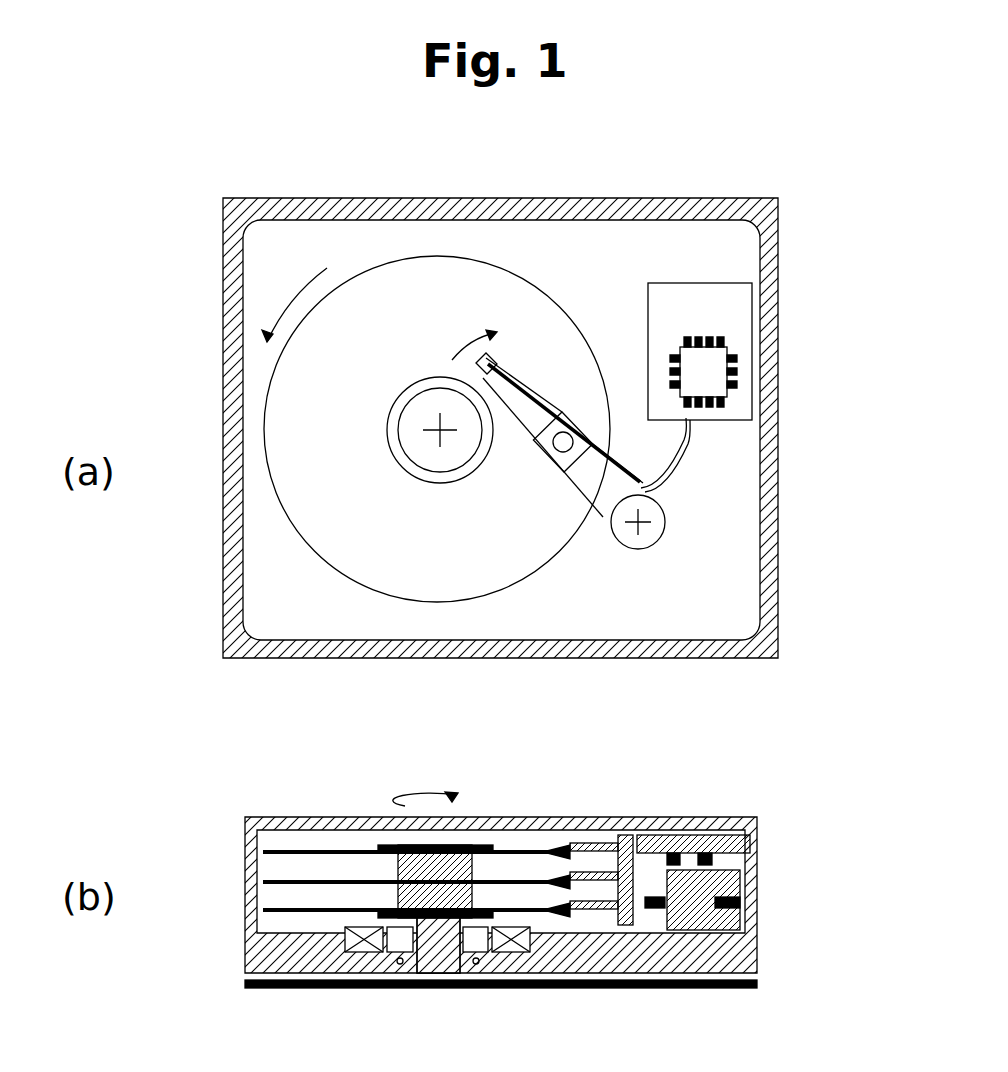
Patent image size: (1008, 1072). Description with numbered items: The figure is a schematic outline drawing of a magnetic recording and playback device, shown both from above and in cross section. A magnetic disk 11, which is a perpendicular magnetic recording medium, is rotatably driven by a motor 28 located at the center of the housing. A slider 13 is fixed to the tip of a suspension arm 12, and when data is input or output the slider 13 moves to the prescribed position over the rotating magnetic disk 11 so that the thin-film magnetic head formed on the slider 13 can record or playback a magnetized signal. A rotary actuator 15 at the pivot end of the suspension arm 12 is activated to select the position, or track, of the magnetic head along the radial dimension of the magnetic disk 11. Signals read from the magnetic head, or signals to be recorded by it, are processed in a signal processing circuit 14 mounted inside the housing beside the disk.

The magnetic disk 11 is at (376, 305).
The suspension arm 12 is at (518, 420).
The slider 13 is at (490, 362).
The signal processing circuit 14 is at (714, 362).
The rotary actuator 15 is at (650, 548).
The motor 28 is at (446, 962).